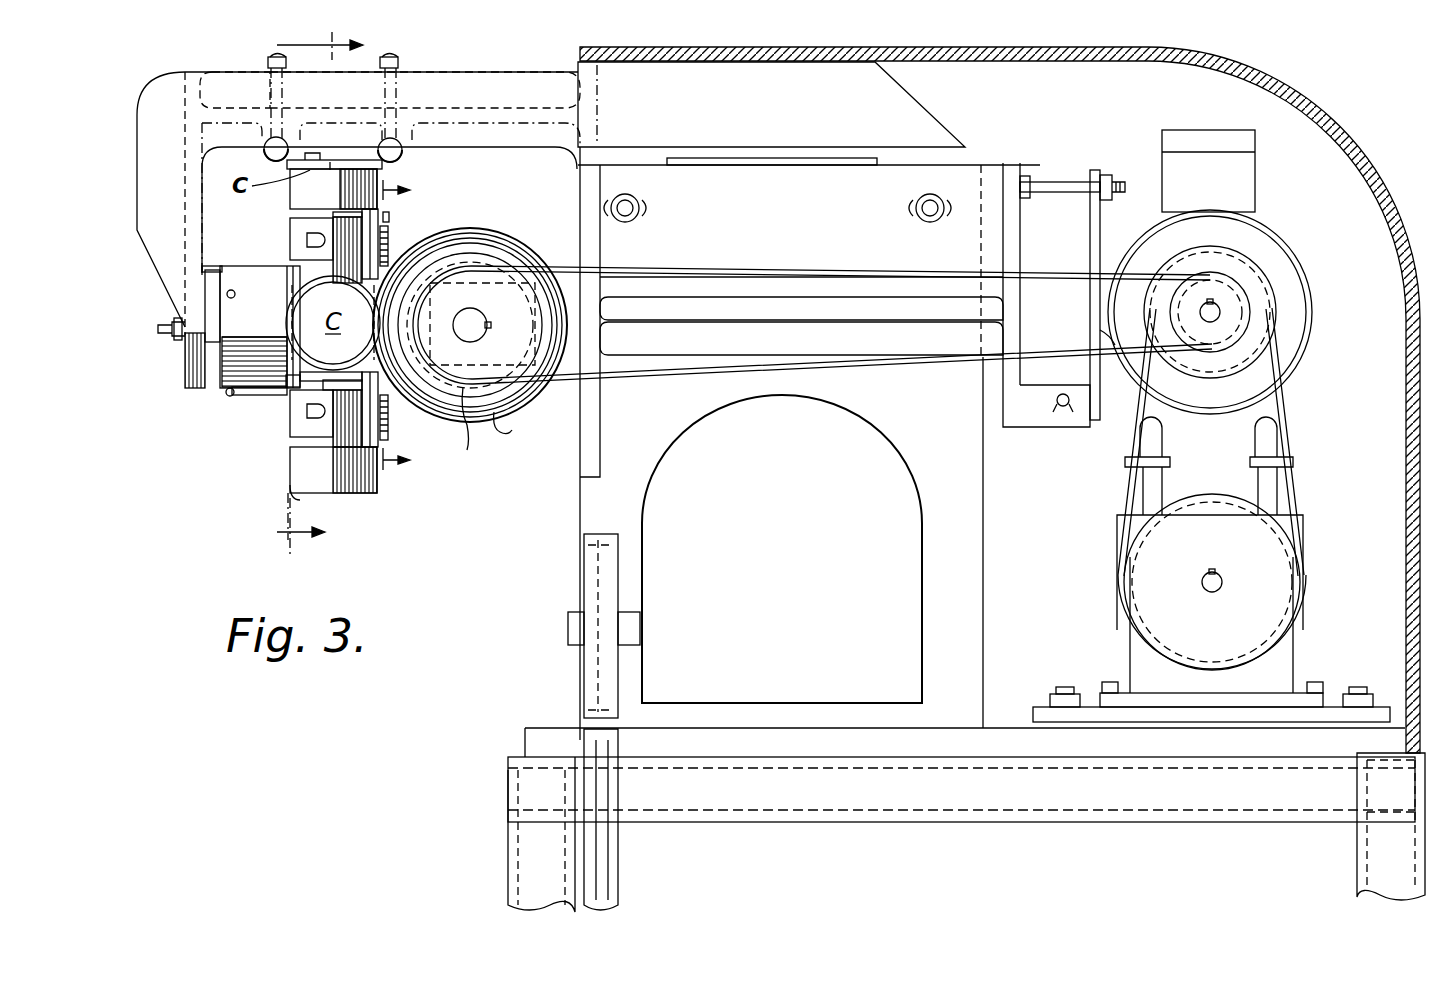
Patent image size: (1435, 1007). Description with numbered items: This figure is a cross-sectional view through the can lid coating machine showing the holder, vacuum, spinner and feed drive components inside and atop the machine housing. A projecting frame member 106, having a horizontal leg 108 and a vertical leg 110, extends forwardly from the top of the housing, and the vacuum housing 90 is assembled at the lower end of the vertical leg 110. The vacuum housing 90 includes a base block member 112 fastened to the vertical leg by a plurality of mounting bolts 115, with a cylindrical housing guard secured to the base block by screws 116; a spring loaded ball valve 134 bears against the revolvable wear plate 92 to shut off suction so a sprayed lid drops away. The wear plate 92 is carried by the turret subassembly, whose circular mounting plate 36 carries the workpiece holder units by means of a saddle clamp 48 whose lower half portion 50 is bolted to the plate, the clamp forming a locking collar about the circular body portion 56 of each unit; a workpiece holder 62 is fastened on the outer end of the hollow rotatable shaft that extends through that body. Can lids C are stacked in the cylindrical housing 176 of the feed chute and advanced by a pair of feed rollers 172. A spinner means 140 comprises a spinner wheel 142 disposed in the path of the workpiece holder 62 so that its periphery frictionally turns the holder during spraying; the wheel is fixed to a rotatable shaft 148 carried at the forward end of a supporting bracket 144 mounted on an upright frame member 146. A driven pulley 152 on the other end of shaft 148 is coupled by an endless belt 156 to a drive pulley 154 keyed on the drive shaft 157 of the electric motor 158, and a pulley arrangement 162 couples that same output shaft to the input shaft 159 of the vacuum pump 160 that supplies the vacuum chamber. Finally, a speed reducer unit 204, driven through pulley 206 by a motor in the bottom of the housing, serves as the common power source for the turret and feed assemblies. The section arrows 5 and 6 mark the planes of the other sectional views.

The section line 5- 5 is at (305, 293).
The section line 6- 6 is at (411, 327).
The circular mounting plate 36 is at (380, 222).
The saddle clamp 48 is at (290, 245).
The lower half portion 50 is at (380, 250).
The circular body portion 56 is at (345, 438).
The workpiece holder 62 is at (380, 182).
The vacuum housing 90 is at (250, 394).
The wear plate 92 is at (306, 384).
The projecting frame member 106 is at (528, 88).
The horizontal leg 108 is at (474, 87).
The vertical leg 110 is at (192, 357).
The base block member 112 is at (212, 292).
The mounting bolts 115 is at (217, 266).
The screws 116 is at (233, 290).
The spring loaded ball valve 134 is at (158, 330).
The spinner means 140 is at (503, 236).
The spinner wheel 142 is at (521, 430).
The supporting bracket 144 is at (1030, 158).
The upright frame member 146 is at (985, 519).
The rotatable shaft 148 is at (478, 306).
The driven pulley 152 is at (479, 432).
The drive pulley 154 is at (1252, 348).
The endless belt 156 is at (925, 362).
The drive shaft 157 is at (1218, 310).
The electric motor 158 is at (1312, 318).
The input shaft 159 is at (1220, 582).
The vacuum pump 160 is at (1295, 645).
The pulley arrangement 162 is at (1300, 395).
The feed rollers 172 is at (264, 154).
The cylindrical housing 176 is at (270, 90).
The speed reducer unit 204 is at (908, 452).
The pulley 206 is at (598, 652).